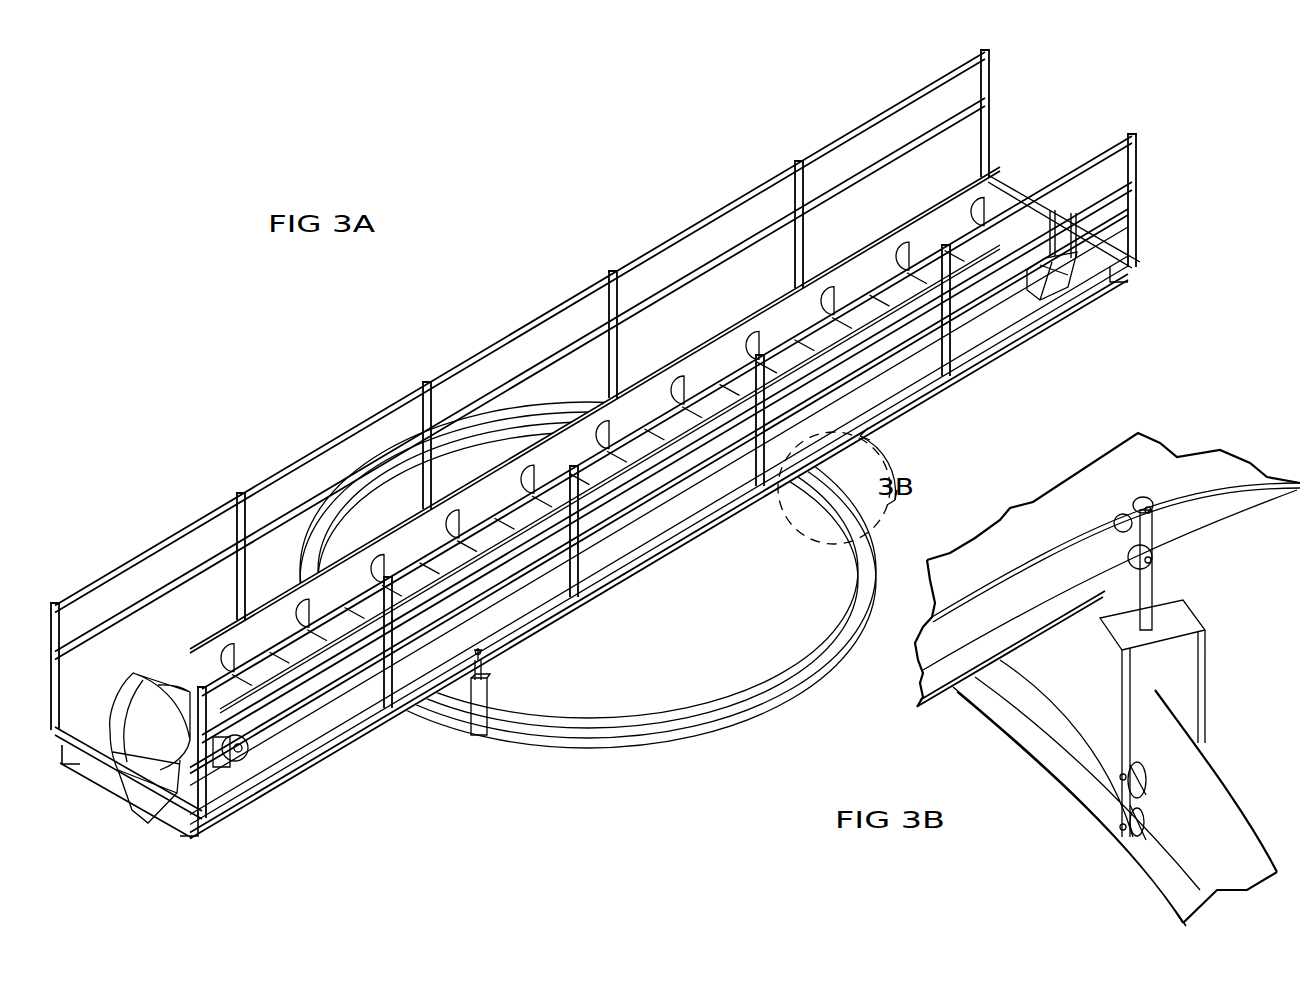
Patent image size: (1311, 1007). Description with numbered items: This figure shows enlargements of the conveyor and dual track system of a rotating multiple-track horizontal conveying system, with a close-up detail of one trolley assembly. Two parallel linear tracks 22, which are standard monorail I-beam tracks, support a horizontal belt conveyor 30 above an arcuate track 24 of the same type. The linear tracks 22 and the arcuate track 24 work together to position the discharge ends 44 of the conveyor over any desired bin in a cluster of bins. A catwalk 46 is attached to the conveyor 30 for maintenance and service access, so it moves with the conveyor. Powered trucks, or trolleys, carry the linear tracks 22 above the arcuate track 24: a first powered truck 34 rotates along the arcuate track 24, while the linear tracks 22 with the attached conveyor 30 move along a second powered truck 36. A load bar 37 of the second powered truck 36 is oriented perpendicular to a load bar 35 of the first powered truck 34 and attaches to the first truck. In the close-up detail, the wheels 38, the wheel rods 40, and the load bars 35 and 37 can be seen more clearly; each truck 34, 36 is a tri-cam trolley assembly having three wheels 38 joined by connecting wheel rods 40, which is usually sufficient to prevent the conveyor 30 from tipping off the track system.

In FIG. 3A, the linear track 22 is at (970, 345).
In FIG. 3A, the arcuate track 24 is at (585, 722).
In FIG. 3B, the arcuate track 24 is at (1115, 793).
In FIG. 3A, the conveyor 30 is at (722, 352).
In FIG. 3A, the first powered truck 34 is at (520, 715).
In FIG. 3B, the first powered truck 34 is at (1100, 857).
In FIG. 3A, the load bar 35 is at (488, 693).
In FIG. 3B, the load bar 35 is at (1205, 682).
In FIG. 3A, the second powered truck 36 is at (487, 657).
In FIG. 3B, the second powered truck 36 is at (1193, 497).
In FIG. 3A, the load bar 37 is at (483, 668).
In FIG. 3B, the load bar 37 is at (1147, 588).
In FIG. 3B, the wheel 38 is at (1130, 503).
In FIG. 3B, the wheel rod 40 is at (1153, 512).
In FIG. 3A, the discharge end 44 is at (140, 800).
In FIG. 3A, the catwalk 46 is at (487, 335).